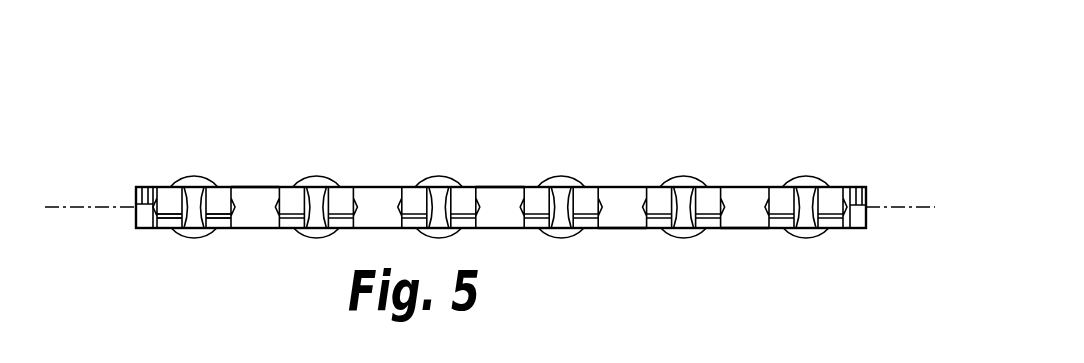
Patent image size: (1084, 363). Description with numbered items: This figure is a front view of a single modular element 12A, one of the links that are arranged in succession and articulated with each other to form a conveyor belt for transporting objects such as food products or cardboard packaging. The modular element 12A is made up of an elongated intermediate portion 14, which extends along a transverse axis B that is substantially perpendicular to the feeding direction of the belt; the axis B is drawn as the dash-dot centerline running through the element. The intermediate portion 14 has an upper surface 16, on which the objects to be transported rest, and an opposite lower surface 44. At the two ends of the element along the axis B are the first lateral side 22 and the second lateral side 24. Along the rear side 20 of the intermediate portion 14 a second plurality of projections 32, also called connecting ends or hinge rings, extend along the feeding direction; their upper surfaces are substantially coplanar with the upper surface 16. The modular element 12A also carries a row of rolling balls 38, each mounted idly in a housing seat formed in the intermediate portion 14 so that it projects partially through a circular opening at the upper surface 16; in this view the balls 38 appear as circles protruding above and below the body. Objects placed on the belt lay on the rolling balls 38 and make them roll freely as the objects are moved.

The modular element 12A is at (790, 155).
The intermediate portion 14 is at (498, 186).
The upper surface 16 is at (379, 187).
The rear side 20 is at (751, 229).
The first lateral side 22 is at (867, 199).
The second lateral side 24 is at (136, 200).
The second plurality of projections 32 is at (222, 222).
The rolling ball 38 is at (812, 178).
The lower surface 44 is at (620, 229).
The transverse axis B is at (933, 207).